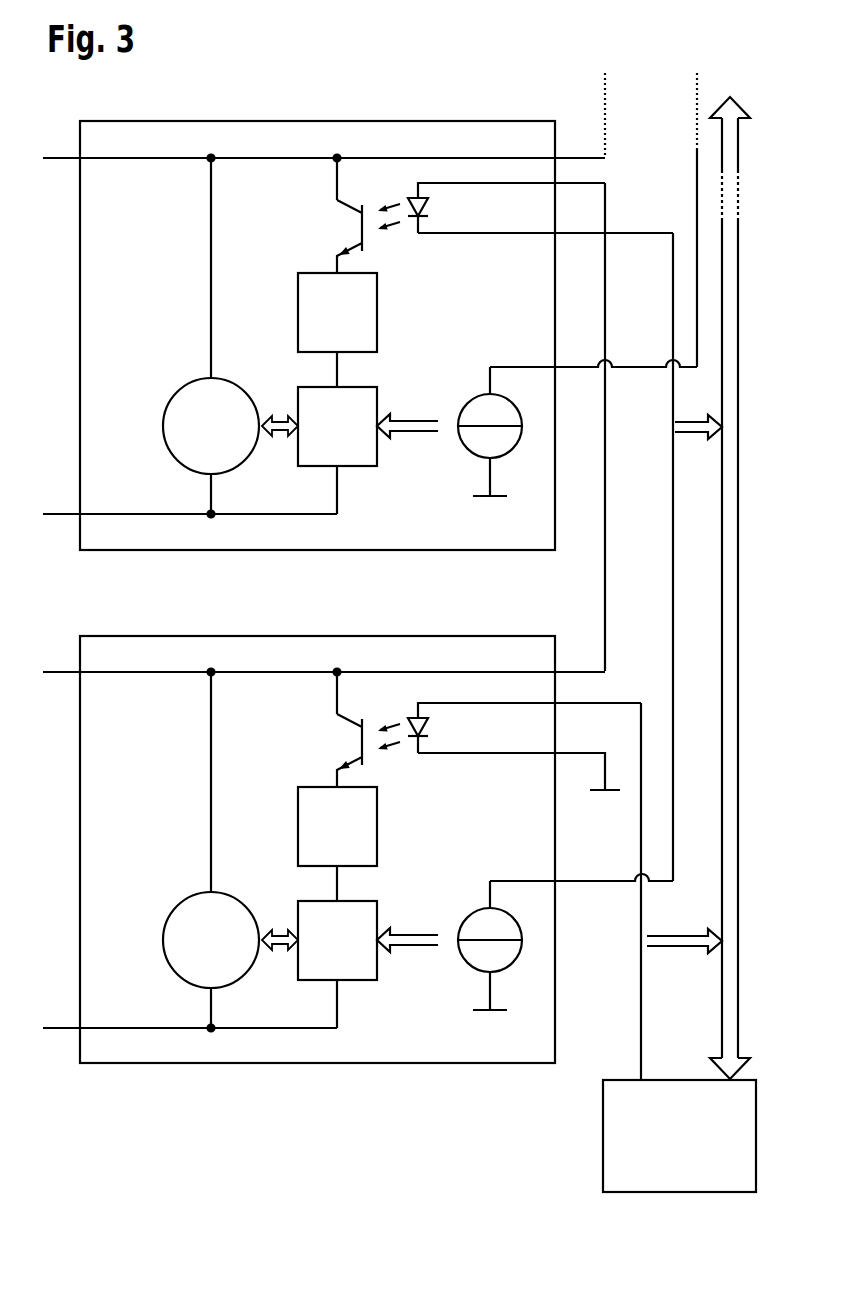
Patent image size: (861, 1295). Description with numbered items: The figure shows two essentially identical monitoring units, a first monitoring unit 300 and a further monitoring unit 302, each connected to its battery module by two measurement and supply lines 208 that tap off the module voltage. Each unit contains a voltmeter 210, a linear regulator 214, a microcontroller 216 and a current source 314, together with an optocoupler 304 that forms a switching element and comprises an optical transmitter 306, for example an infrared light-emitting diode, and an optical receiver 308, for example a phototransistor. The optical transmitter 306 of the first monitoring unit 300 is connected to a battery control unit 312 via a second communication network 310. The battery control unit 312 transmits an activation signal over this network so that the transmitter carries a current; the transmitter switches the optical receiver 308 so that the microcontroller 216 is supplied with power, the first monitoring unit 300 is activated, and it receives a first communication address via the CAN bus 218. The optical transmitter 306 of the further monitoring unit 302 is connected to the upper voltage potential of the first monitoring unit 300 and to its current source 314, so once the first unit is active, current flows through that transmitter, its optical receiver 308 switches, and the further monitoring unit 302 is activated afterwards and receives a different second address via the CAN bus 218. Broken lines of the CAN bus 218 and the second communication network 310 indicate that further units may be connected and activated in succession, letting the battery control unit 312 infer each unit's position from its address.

The measurement and supply lines 208 is at (324, 586).
The voltmeter 210 is at (206, 593).
The linear regulator 214 is at (311, 547).
The microcontroller 216 is at (360, 705).
The CAN bus 218 is at (563, 588).
The first monitoring unit 300 is at (317, 812).
The further monitoring unit 302 is at (317, 299).
The optocoupler 304 is at (405, 389).
The optical transmitter 306 is at (525, 486).
The optical receiver 308 is at (311, 484).
The second communication network 310 is at (638, 576).
The battery control unit 312 is at (632, 1136).
The current source 314 is at (572, 659).